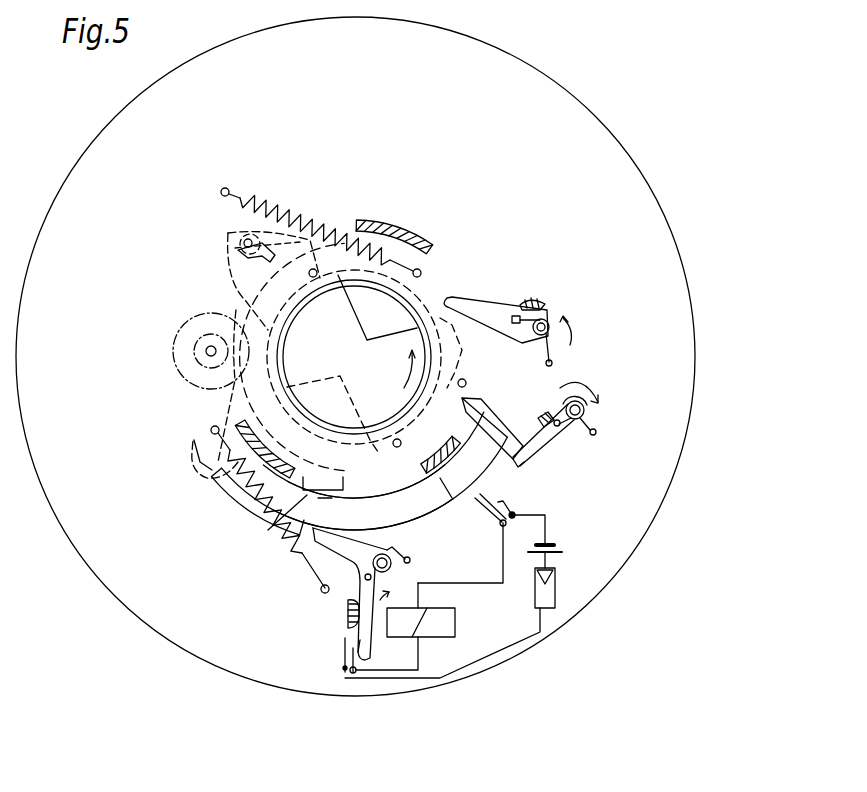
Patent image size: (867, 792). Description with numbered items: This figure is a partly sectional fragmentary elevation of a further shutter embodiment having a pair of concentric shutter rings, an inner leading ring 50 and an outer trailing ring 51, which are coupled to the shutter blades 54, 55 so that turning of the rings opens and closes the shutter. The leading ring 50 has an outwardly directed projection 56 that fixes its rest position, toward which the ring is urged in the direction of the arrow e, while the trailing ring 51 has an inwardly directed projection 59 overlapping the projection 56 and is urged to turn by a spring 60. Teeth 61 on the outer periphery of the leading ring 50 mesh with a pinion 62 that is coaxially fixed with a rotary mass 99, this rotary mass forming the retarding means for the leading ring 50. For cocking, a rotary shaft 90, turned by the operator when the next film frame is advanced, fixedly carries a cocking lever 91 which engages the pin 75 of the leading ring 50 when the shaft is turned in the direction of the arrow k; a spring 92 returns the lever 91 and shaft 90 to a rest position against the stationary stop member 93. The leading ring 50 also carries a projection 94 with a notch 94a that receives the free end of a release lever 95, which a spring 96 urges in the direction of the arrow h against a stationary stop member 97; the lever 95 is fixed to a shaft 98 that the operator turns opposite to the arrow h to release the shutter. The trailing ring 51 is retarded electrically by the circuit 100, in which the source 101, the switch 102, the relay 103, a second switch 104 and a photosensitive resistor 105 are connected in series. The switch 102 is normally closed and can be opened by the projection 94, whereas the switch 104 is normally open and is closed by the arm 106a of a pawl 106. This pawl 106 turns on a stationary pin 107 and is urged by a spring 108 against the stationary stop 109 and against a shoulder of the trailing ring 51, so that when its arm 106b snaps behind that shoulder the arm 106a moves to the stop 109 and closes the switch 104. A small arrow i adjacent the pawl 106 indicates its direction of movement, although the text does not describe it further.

The inner shutter ring 50 is at (437, 262).
The outer shutter ring 51 is at (396, 192).
The shutter blade 54 is at (437, 478).
The shutter blade 55 is at (305, 230).
The outwardly directed projection 56 is at (345, 490).
The inwardly directed projection 59 is at (268, 530).
The spring 60 is at (248, 506).
The teeth 61 is at (225, 270).
The pinion 62 is at (195, 340).
The pin 75 is at (468, 383).
The rotary shaft 90 is at (545, 320).
The cocking lever 91 is at (493, 300).
The spring 92 is at (553, 352).
The stationary stop member 93 is at (532, 298).
The projection 94 is at (486, 437).
The notch 94a is at (516, 466).
The release lever 95 is at (556, 444).
The spring 96 is at (592, 427).
The stationary stop member 97 is at (543, 412).
The shaft 98 is at (584, 408).
The rotary mass 99 is at (182, 416).
The electrical circuit 100 is at (504, 650).
The source 101 is at (548, 543).
The switch 102 is at (488, 506).
The relay 103 is at (445, 634).
The second switch 104 is at (343, 662).
The photosensitive resistor 105 is at (552, 595).
The pawl 106 is at (372, 592).
The arm 106a is at (362, 637).
The arm 106b is at (306, 560).
The stationary pin 107 is at (386, 556).
The spring 108 is at (410, 560).
The stationary stop 109 is at (330, 490).
The arrow e is at (407, 362).
The arrow h is at (590, 388).
The direction arrow i is at (385, 586).
The arrow k is at (578, 325).